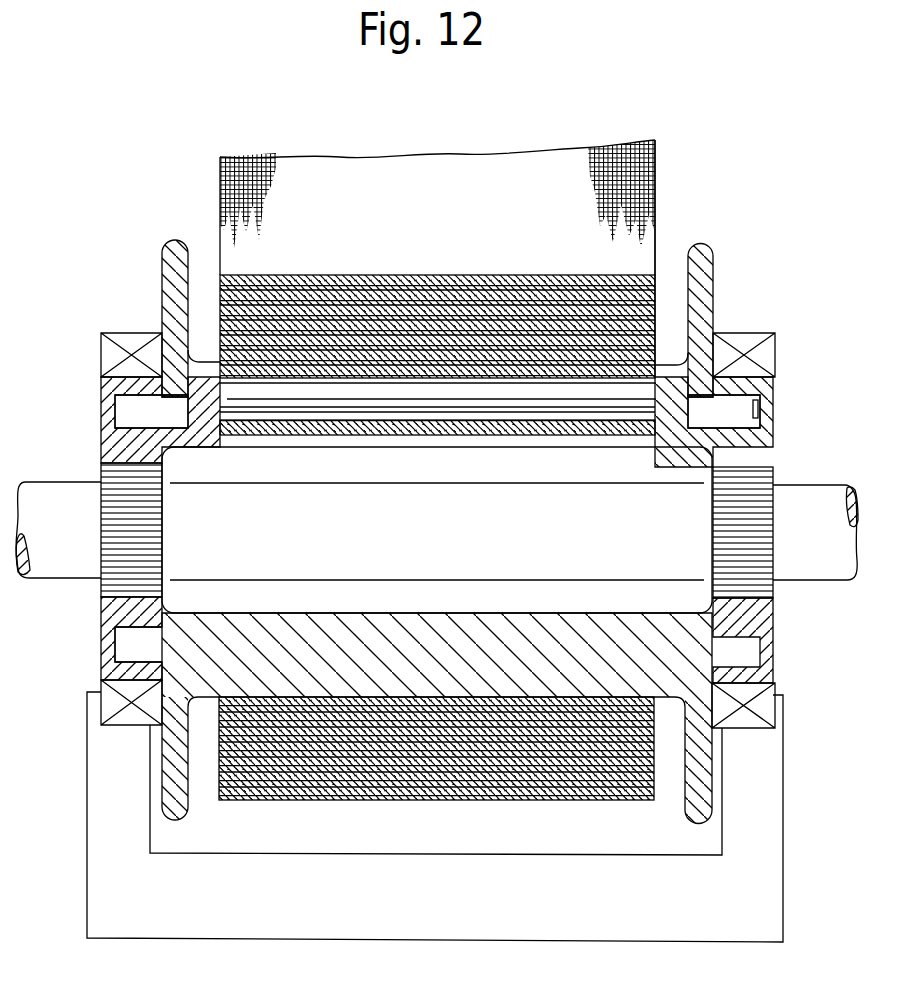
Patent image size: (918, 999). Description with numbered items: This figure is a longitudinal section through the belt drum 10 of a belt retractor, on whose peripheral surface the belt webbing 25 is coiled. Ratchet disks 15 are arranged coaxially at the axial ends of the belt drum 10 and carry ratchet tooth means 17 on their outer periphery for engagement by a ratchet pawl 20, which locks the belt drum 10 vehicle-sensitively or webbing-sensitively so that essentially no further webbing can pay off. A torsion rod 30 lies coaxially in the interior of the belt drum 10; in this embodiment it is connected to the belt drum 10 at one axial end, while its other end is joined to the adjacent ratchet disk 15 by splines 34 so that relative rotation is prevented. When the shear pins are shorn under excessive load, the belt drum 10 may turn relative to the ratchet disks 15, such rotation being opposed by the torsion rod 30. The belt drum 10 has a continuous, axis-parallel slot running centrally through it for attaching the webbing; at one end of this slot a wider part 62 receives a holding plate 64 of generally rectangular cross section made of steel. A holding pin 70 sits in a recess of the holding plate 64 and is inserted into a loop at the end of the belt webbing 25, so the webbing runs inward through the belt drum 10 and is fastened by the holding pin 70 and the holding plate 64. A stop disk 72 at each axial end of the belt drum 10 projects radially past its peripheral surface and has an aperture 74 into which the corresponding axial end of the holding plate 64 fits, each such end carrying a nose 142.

The belt drum 10 is at (175, 641).
The ratchet disk 15 is at (110, 386).
The ratchet tooth means 17 is at (108, 350).
The ratchet pawl 20 is at (560, 905).
The belt webbing 25 is at (377, 185).
The torsion rod 30 is at (680, 548).
The splines 34 is at (117, 553).
The wider part 62 is at (410, 600).
The holding plate 64 is at (667, 387).
The holding pin 70 is at (455, 395).
The stop disk 72 is at (168, 257).
The aperture 74 is at (177, 387).
The nose 142 is at (128, 415).